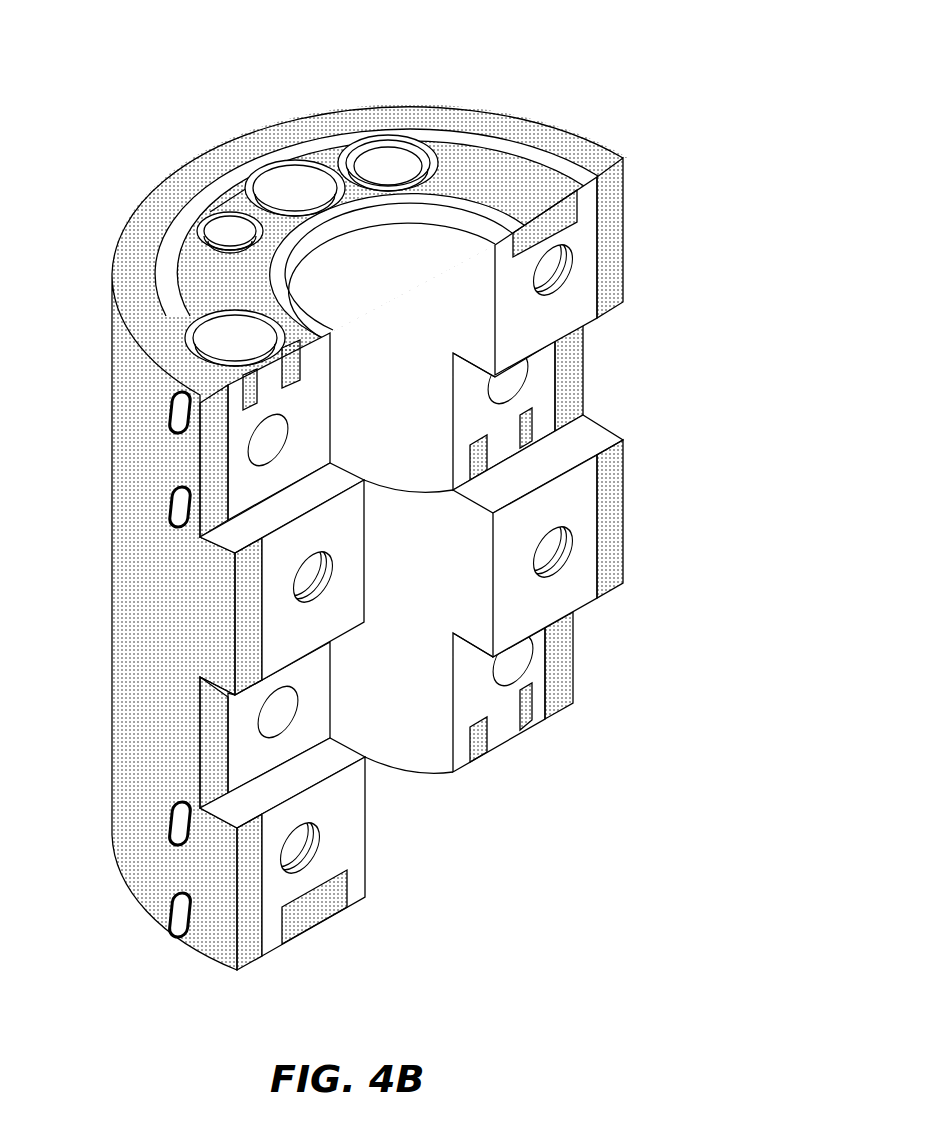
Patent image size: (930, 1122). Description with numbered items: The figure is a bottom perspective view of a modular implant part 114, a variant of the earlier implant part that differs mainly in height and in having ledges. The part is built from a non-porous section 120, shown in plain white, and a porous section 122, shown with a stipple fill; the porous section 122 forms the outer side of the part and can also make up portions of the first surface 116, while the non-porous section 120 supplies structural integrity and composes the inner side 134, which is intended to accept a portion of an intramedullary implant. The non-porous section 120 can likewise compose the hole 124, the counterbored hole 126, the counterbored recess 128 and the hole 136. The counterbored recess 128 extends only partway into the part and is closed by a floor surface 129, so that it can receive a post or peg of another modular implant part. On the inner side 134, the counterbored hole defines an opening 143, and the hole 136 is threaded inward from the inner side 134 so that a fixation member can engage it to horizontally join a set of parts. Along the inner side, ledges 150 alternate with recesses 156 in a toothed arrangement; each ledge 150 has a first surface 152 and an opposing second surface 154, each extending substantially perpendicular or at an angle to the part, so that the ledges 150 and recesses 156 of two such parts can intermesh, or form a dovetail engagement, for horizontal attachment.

The modular implant part 114 is at (552, 61).
The first surface 116 is at (523, 180).
The non-porous section 120 is at (580, 235).
The porous section 122 is at (185, 195).
The hole 124 is at (173, 253).
The counterbored hole 126 is at (283, 178).
The counterbored recess 128 is at (385, 148).
The floor surface 129 is at (405, 165).
The inner side 134 is at (417, 750).
The hole 136 is at (553, 272).
The opening 143 is at (277, 438).
The ledge 150 is at (600, 498).
The first surface of ledge 152 is at (557, 456).
The second opposing surface of ledge 154 is at (590, 607).
The recess 156 is at (310, 675).